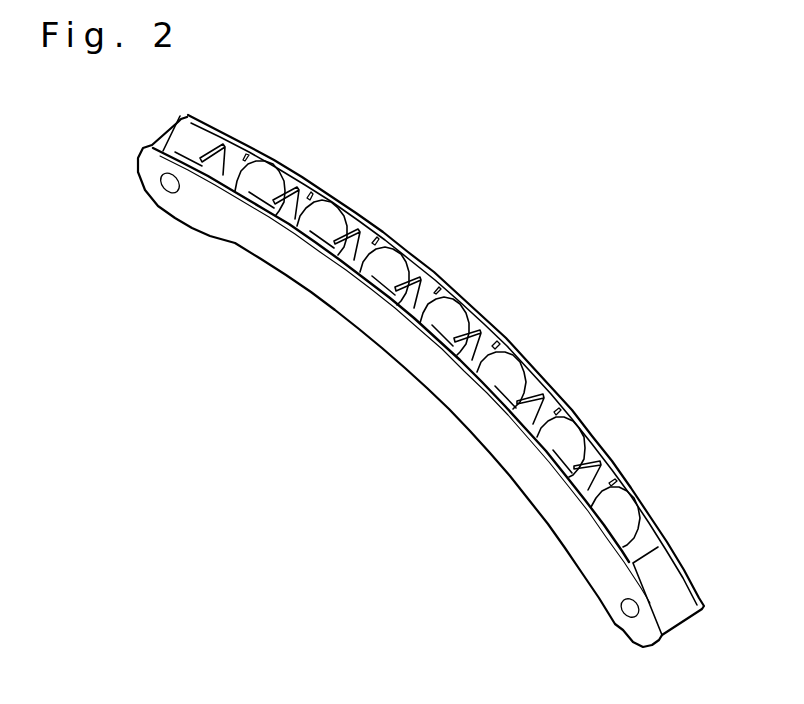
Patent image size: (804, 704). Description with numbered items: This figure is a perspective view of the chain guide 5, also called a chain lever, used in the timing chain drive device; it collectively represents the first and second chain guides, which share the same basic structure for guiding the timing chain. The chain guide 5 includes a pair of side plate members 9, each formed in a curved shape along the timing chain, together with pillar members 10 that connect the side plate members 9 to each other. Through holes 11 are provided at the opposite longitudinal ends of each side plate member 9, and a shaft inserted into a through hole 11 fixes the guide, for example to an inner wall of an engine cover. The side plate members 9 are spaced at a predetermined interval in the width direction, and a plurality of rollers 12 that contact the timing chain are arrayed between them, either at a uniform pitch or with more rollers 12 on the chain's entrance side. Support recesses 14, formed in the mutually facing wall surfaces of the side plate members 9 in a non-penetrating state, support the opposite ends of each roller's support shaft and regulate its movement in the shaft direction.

The chain guide 5 is at (417, 381).
The side plate member 9 is at (430, 377).
The pillar member 10 is at (418, 297).
The through hole 11 is at (166, 186).
The roller 12 is at (558, 445).
The support recess 14 is at (524, 360).